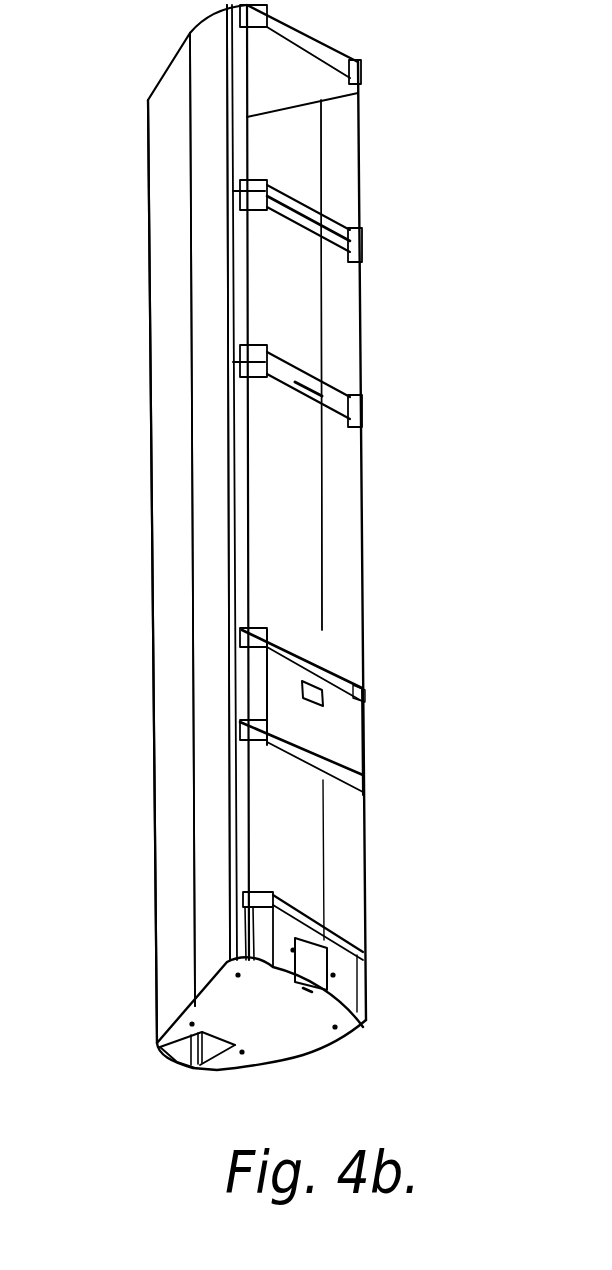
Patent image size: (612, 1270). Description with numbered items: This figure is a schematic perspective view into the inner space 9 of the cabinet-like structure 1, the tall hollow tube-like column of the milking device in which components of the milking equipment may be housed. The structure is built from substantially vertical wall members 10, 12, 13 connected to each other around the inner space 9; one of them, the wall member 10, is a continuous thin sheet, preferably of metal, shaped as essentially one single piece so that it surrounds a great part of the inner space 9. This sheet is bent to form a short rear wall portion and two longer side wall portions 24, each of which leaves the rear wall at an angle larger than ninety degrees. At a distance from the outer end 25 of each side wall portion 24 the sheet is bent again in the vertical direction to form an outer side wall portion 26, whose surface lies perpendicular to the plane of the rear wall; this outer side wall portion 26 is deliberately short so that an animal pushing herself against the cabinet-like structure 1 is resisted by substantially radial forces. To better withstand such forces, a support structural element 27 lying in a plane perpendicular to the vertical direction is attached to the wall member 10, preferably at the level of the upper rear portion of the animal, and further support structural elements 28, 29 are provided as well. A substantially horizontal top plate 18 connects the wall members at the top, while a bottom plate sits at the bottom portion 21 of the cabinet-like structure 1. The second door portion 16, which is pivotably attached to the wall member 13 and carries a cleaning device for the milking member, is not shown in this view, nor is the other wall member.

The cabinet-like structure 1 is at (125, 643).
The wall member 10 is at (157, 82).
The side wall portion 24 is at (163, 253).
The outer end 25 is at (237, 312).
The outer side wall portion 26 is at (208, 397).
The further support structural element 29 is at (342, 62).
The second door portion 16 is at (307, 82).
The inner space 9 is at (297, 503).
The further support structural element 28 is at (362, 233).
The support structural element 27 is at (337, 400).
The wall member 12 is at (350, 722).
The wall member 13 is at (345, 982).
The top plate 18 is at (211, 996).
The bottom portion 21 is at (180, 1066).